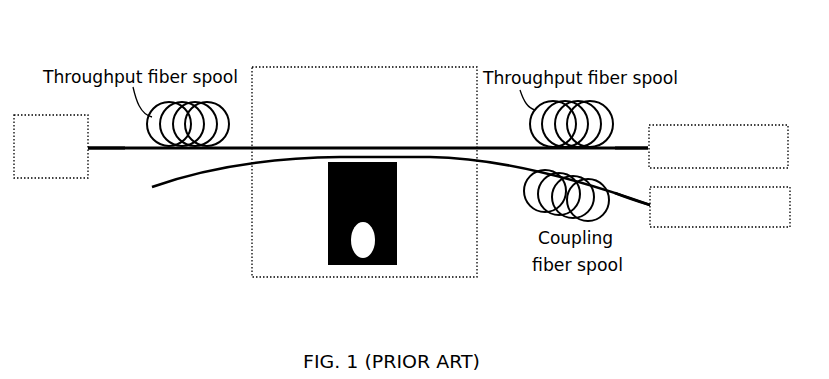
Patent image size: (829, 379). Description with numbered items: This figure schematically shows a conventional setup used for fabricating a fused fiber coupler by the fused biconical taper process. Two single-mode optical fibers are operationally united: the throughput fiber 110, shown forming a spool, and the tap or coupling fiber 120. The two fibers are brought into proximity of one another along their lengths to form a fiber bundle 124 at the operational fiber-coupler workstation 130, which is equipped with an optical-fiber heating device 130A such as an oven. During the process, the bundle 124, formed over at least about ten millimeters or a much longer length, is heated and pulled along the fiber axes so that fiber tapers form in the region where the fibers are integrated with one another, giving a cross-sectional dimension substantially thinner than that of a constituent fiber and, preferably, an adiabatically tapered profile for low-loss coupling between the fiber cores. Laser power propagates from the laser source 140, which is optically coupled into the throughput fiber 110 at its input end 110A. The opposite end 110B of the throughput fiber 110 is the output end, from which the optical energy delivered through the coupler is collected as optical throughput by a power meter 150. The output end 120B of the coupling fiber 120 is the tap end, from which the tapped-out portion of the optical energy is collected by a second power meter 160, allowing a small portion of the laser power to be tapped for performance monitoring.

The throughput fiber 110 is at (368, 133).
The input end of the throughput fiber 110A is at (103, 166).
The output end of the throughput fiber 110B is at (650, 135).
The tap or coupling fiber 120 is at (266, 178).
The output end of the coupling fiber 120B is at (633, 218).
The fiber bundle 124 is at (442, 138).
The fiber-coupler workstation 130 is at (462, 255).
The optical-fiber heating device 130A is at (328, 186).
The laser source 140 is at (51, 157).
The power meter 150 is at (718, 135).
The power meter 160 is at (720, 217).